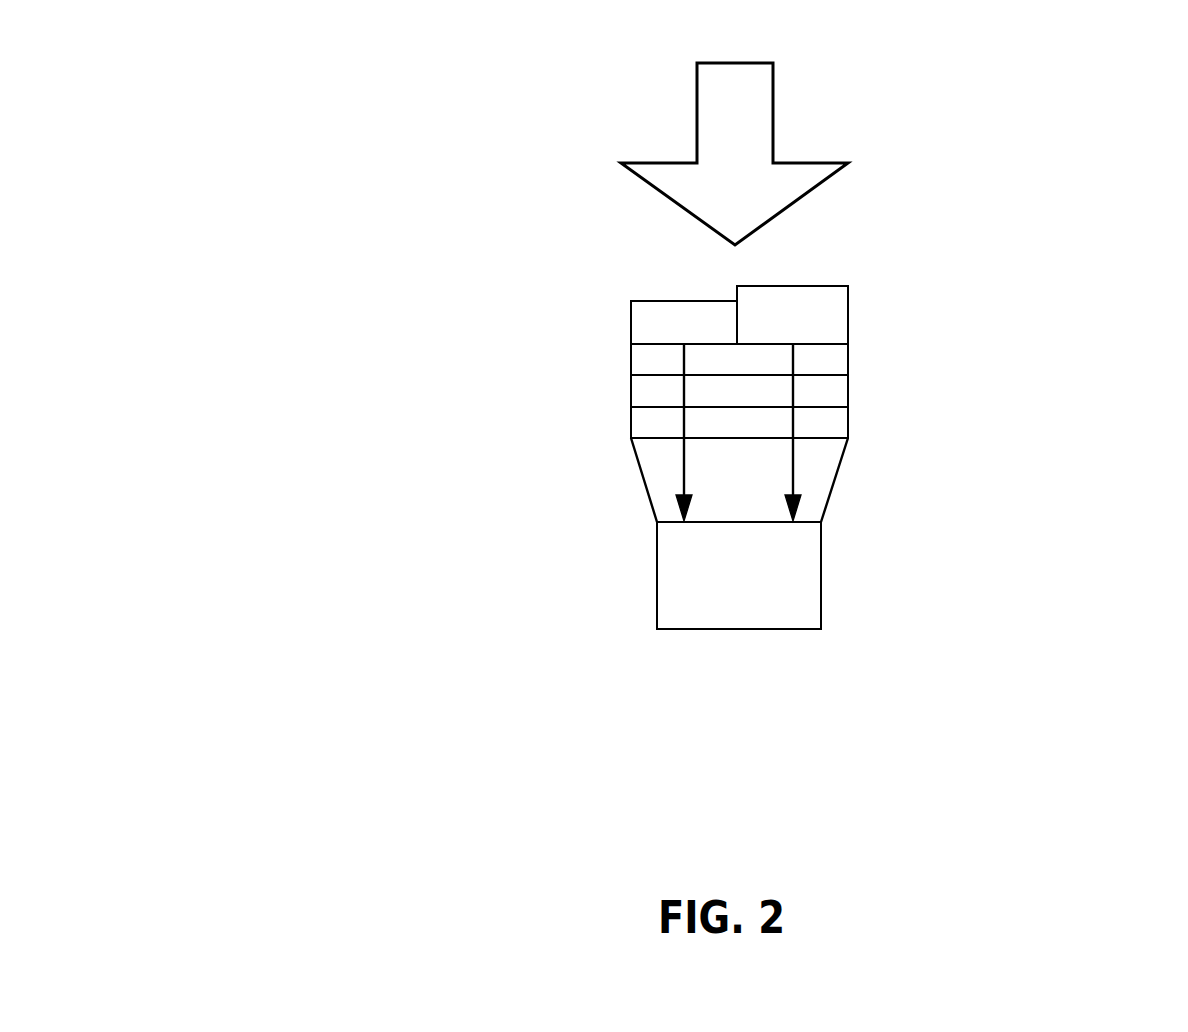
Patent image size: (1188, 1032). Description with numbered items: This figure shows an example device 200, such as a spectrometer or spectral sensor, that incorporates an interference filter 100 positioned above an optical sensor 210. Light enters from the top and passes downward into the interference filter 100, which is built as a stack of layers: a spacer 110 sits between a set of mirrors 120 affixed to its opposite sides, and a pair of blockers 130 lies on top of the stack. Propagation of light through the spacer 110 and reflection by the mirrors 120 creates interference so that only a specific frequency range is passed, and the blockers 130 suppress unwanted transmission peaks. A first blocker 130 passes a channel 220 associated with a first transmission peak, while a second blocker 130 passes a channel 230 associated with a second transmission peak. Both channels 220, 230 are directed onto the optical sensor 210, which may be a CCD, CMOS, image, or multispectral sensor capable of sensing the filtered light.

The device 200 is at (213, 42).
The interference filter 100 is at (593, 331).
The blocker 130 is at (739, 315).
The mirror 120 is at (739, 391).
The spacer 110 is at (739, 391).
The channel associated with a second transmission peak 230 is at (682, 459).
The channel associated with a first transmission peak 220 is at (797, 457).
The optical sensor 210 is at (739, 575).